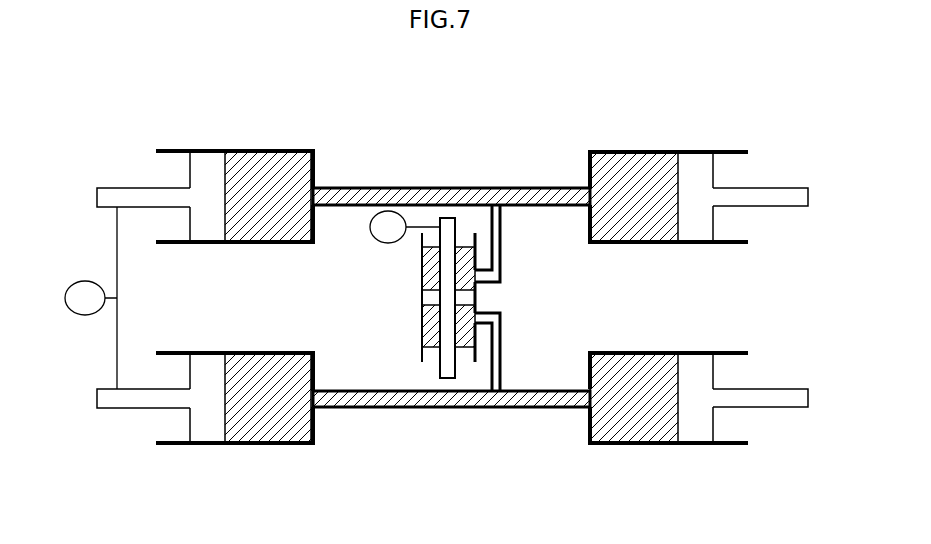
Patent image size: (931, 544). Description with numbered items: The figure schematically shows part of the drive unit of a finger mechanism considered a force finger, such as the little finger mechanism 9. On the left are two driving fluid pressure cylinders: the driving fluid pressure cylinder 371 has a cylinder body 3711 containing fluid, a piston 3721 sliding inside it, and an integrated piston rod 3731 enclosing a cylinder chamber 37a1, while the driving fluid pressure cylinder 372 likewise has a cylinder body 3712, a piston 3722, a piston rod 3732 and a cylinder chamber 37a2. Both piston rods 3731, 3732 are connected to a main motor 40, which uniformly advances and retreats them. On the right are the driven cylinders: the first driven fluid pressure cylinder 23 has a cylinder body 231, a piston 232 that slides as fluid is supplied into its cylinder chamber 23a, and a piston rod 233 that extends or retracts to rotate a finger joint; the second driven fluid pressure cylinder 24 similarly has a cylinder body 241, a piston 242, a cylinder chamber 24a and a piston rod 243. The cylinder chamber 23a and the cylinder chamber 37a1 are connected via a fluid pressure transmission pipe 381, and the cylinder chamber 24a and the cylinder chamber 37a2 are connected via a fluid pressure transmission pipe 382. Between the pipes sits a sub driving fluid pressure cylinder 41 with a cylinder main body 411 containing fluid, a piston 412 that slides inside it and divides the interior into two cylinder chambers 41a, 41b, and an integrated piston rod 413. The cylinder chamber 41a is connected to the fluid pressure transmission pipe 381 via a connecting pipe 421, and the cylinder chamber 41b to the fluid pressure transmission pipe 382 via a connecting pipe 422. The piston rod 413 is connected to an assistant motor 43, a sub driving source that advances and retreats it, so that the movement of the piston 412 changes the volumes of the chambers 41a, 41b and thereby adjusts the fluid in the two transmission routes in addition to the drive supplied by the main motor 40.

The little finger mechanism 9 is at (445, 113).
The first driven fluid pressure cylinder 23 is at (655, 137).
The cylinder body 231 is at (625, 150).
The piston 232 is at (695, 243).
The piston rod 233 is at (782, 208).
The cylinder chamber 23a is at (625, 243).
The second driven fluid pressure cylinder 24 is at (652, 460).
The cylinder body 241 is at (625, 444).
The piston 242 is at (695, 352).
The piston rod 243 is at (782, 409).
The cylinder chamber 24a is at (625, 352).
The driving fluid pressure cylinder 371 is at (225, 137).
The cylinder body 3711 is at (268, 148).
The piston 3721 is at (207, 244).
The piston rod 3731 is at (122, 186).
The cylinder chamber 37a1 is at (265, 244).
The driving fluid pressure cylinder 372 is at (222, 460).
The cylinder body 3712 is at (265, 444).
The piston 3722 is at (207, 352).
The piston rod 3732 is at (122, 410).
The cylinder chamber 37a2 is at (265, 352).
The fluid pressure transmission pipe 381 is at (458, 186).
The fluid pressure transmission pipe 382 is at (458, 409).
The main motor 40 is at (85, 316).
The sub driving fluid pressure cylinder 41 is at (408, 296).
The cylinder main body 411 is at (421, 351).
The piston 412 is at (478, 296).
The piston rod 413 is at (480, 190).
The cylinder chamber 41a is at (421, 258).
The cylinder chamber 41b is at (421, 318).
The connecting pipe 421 is at (501, 250).
The connecting pipe 422 is at (501, 345).
The assistant motor 43 is at (370, 233).